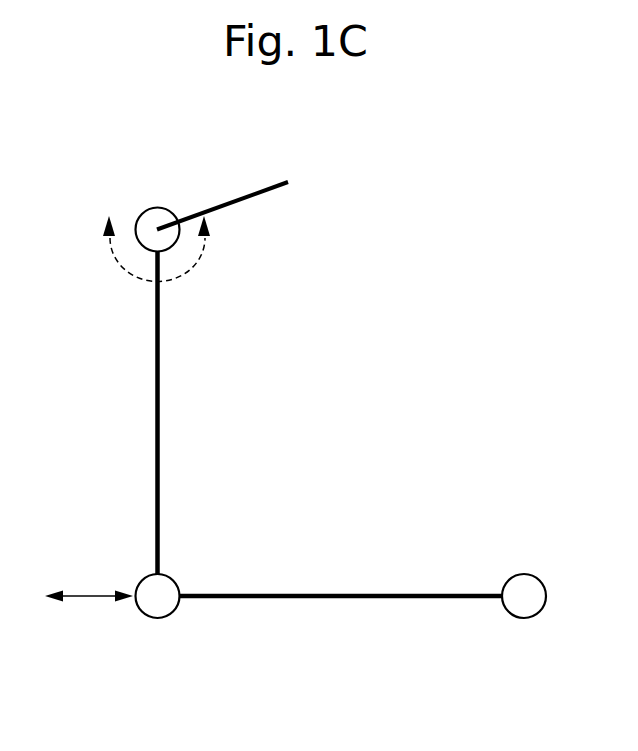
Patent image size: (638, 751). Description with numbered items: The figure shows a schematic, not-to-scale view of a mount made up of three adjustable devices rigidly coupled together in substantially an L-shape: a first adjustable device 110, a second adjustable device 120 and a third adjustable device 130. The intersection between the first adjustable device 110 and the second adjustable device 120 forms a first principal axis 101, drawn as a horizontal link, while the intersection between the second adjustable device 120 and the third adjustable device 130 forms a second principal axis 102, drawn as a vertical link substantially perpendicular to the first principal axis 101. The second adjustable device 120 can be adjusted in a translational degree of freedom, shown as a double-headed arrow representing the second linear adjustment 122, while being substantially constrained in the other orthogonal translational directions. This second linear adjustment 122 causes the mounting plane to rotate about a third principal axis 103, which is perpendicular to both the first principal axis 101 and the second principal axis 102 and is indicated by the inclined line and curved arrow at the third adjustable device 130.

The first principal axis 101 is at (355, 593).
The second principal axis 102 is at (156, 402).
The third principal axis 103 is at (237, 200).
The first adjustable device 110 is at (522, 618).
The second adjustable device 120 is at (155, 618).
The second linear adjustment 122 is at (93, 593).
The third adjustable device 130 is at (148, 208).